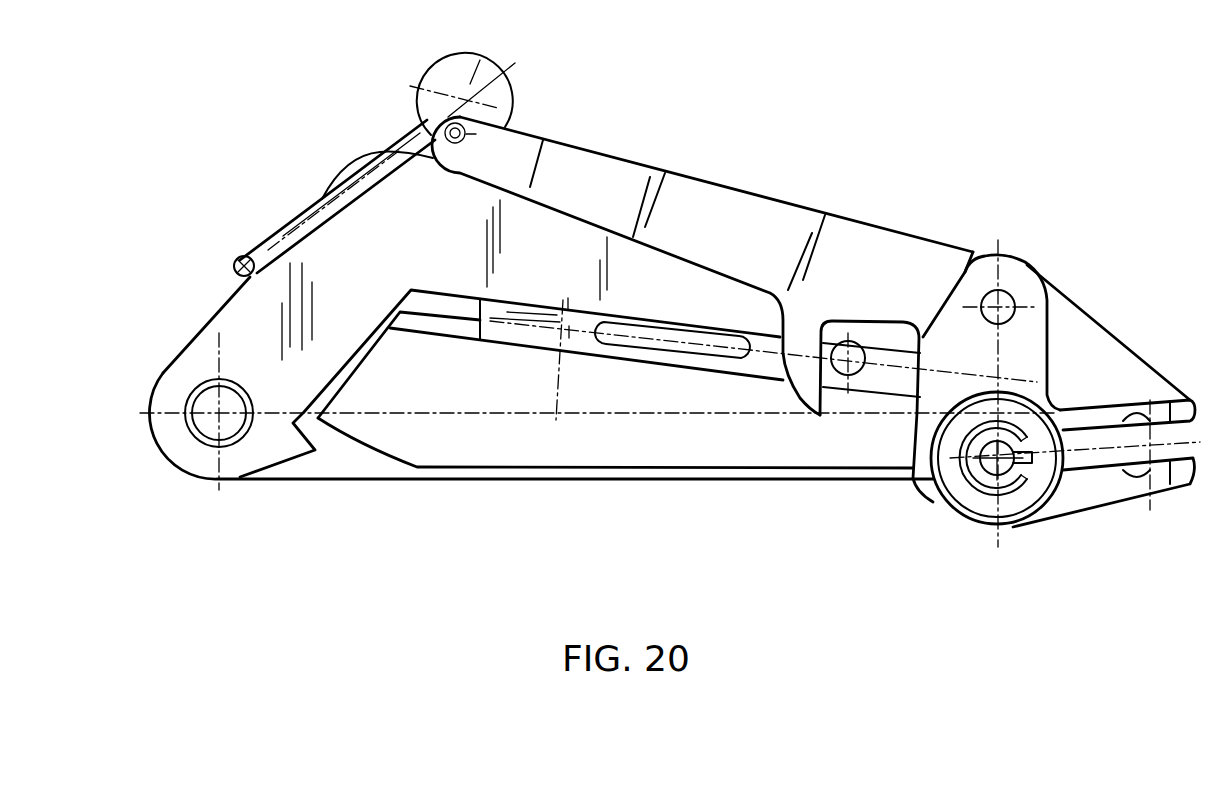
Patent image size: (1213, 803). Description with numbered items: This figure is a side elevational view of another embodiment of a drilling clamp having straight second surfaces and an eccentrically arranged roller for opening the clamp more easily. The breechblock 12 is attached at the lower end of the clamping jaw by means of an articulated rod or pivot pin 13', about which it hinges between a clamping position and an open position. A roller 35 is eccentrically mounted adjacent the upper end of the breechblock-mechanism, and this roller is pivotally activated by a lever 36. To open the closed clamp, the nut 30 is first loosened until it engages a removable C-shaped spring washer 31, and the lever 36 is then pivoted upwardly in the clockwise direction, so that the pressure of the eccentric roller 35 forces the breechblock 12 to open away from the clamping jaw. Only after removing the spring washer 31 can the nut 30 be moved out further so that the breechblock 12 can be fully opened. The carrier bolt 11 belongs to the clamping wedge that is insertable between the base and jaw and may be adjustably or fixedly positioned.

The carrier bolt 11 is at (820, 415).
The breechblock 12 is at (716, 192).
The articulated rod or pivot pin 13' is at (1056, 372).
The nut 30 is at (1007, 503).
The spring washer 31 is at (977, 487).
The roller 35 is at (497, 91).
The lever 36 is at (290, 224).